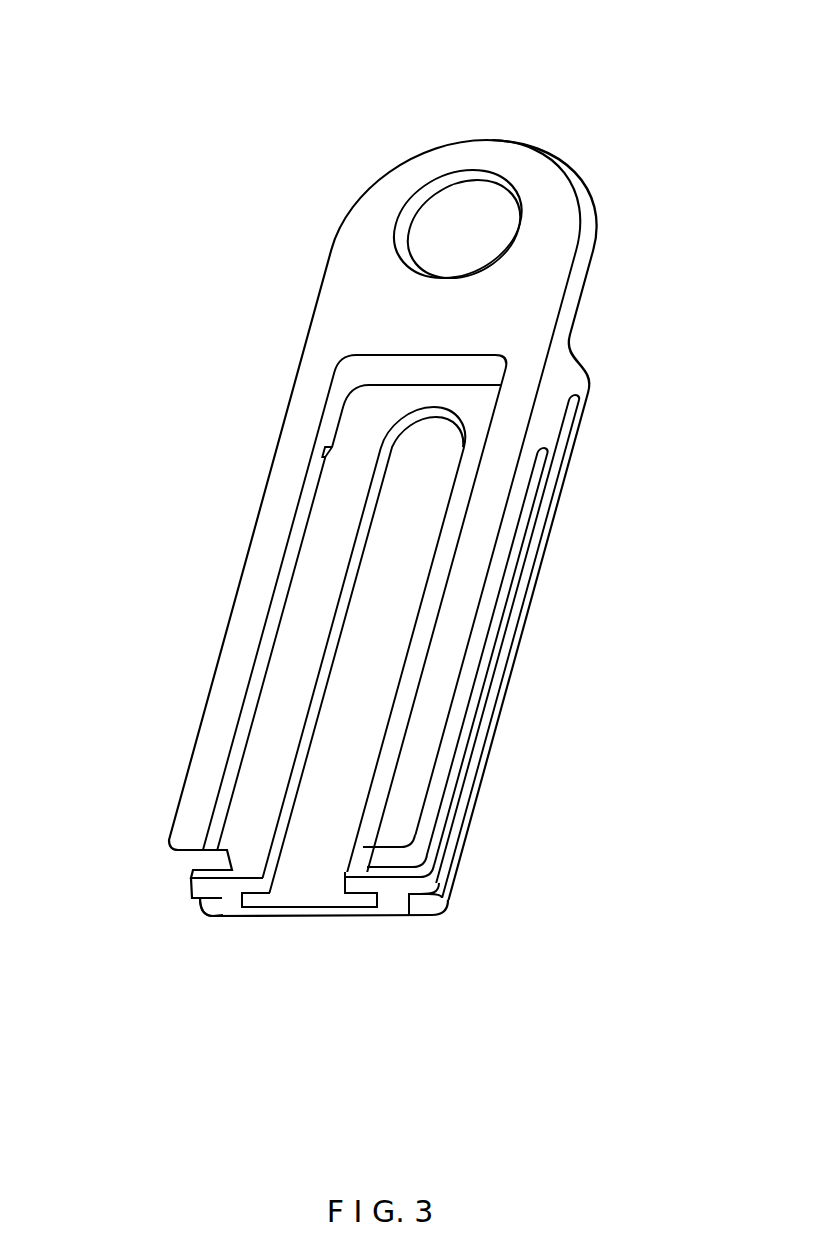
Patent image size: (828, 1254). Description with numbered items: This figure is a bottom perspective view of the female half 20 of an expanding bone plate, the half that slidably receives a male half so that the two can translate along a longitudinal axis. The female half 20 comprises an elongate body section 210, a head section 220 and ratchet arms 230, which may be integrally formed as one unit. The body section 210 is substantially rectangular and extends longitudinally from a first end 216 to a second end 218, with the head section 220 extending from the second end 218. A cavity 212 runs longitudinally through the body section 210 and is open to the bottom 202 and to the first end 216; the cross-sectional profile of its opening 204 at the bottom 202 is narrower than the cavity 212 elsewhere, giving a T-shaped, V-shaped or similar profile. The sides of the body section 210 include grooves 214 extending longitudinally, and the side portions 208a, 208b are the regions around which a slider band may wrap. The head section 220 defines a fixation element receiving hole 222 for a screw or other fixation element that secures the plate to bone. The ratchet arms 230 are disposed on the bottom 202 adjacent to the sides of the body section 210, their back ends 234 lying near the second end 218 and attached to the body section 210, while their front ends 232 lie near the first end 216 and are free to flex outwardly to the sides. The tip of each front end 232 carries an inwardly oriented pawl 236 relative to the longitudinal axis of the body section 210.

The female half 20 is at (348, 132).
The bottom 202 is at (300, 690).
The opening 204 is at (422, 588).
The side portion 208a is at (262, 472).
The side portion 208b is at (545, 451).
The body section 210 is at (510, 665).
The cavity 212 is at (303, 888).
The grooves 214 is at (200, 905).
The first end 216 is at (388, 905).
The second end 218 is at (572, 368).
The head section 220 is at (565, 238).
The fixation element receiving hole 222 is at (410, 242).
The ratchet arms 230 is at (258, 578).
The front ends 232 is at (178, 822).
The back ends 234 is at (292, 383).
The pawl 236 is at (405, 880).